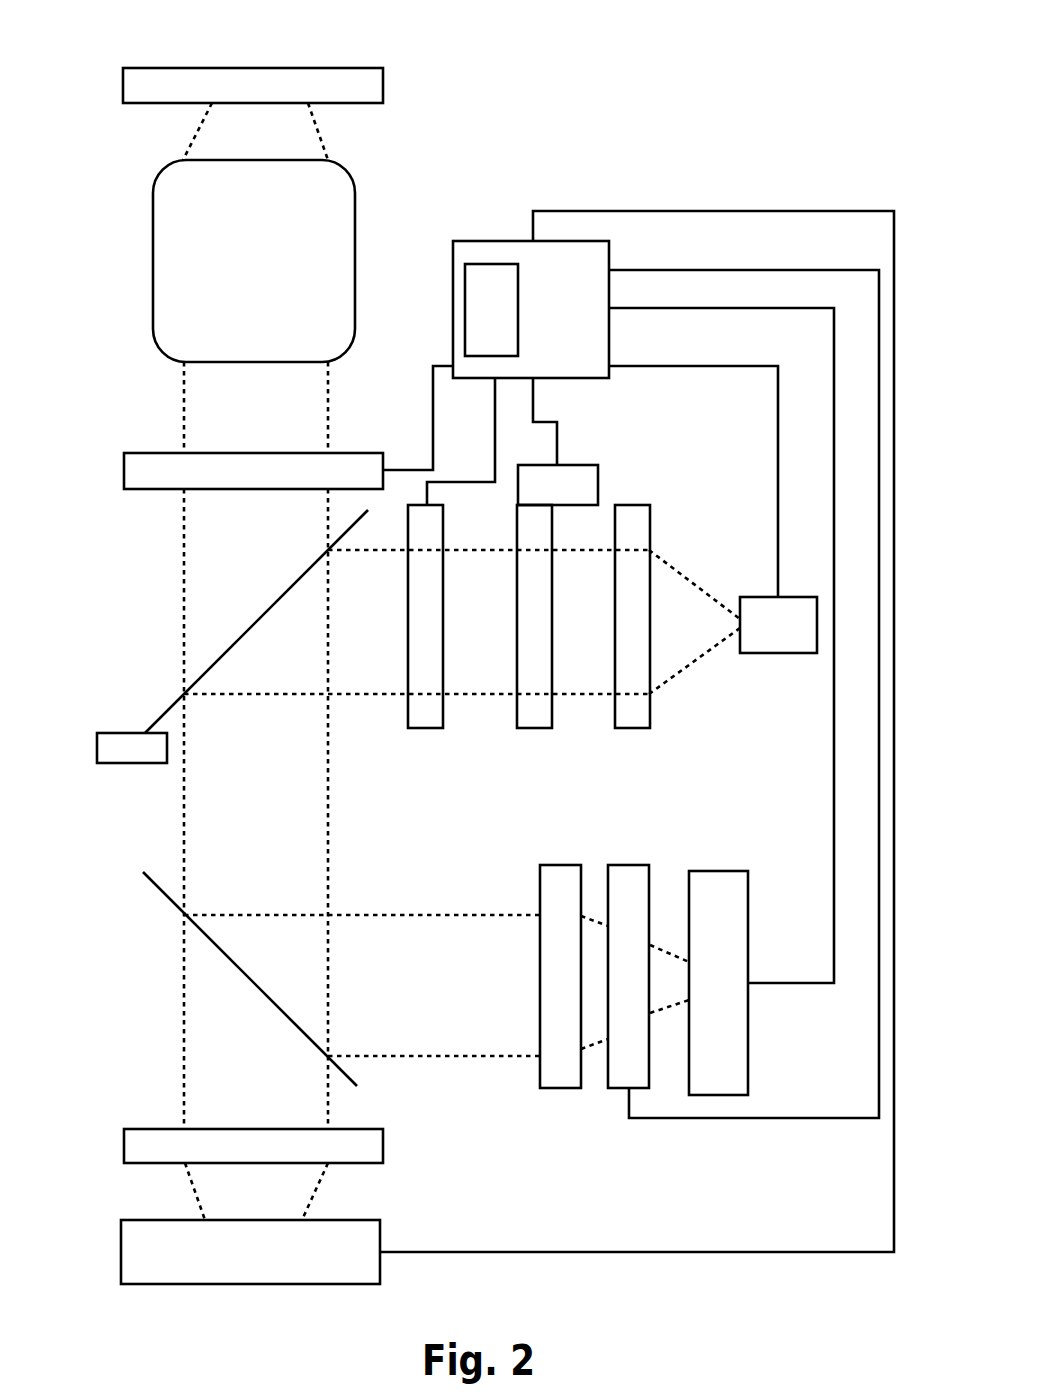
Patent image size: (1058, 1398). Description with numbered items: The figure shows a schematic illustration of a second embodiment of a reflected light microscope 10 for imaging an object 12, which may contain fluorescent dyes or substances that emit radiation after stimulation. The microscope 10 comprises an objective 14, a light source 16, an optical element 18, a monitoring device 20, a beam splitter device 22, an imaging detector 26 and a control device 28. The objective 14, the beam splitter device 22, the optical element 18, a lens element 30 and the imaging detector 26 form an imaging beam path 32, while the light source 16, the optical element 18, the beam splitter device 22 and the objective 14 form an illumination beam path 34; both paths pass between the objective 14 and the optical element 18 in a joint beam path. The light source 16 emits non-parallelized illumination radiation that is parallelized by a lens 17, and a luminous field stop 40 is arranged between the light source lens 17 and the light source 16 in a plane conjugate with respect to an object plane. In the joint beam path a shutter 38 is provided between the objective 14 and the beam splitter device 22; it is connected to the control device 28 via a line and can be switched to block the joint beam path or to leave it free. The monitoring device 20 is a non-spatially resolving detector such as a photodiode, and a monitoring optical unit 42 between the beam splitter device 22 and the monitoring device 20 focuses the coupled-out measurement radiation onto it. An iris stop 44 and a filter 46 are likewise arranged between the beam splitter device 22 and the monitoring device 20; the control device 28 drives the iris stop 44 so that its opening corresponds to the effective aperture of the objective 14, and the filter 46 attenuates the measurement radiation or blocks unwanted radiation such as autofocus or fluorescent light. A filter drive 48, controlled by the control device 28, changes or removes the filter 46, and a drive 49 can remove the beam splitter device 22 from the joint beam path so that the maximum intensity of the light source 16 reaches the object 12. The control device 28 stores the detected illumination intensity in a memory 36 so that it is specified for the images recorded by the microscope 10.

The reflected light microscope 10 is at (619, 107).
The object 12 is at (123, 87).
The objective 14 is at (153, 262).
The light source 16 is at (718, 871).
The lens 17 is at (560, 1088).
The optical element 18 is at (140, 860).
The monitoring device 20 is at (778, 653).
The beam splitter device 22 is at (178, 695).
The imaging detector 26 is at (121, 1252).
The control device 28 is at (506, 241).
The lens element 30 is at (123, 1147).
The imaging beam path 32 is at (161, 1030).
The illumination beam path 34 is at (375, 897).
The memory 36 is at (491, 264).
The shutter 38 is at (123, 470).
The luminous field stop 40 is at (620, 1088).
The monitoring optical unit 42 is at (632, 728).
The iris stop 44 is at (425, 728).
The filter 46 is at (535, 728).
The filter drive 48 is at (598, 485).
The drive 49 is at (133, 733).